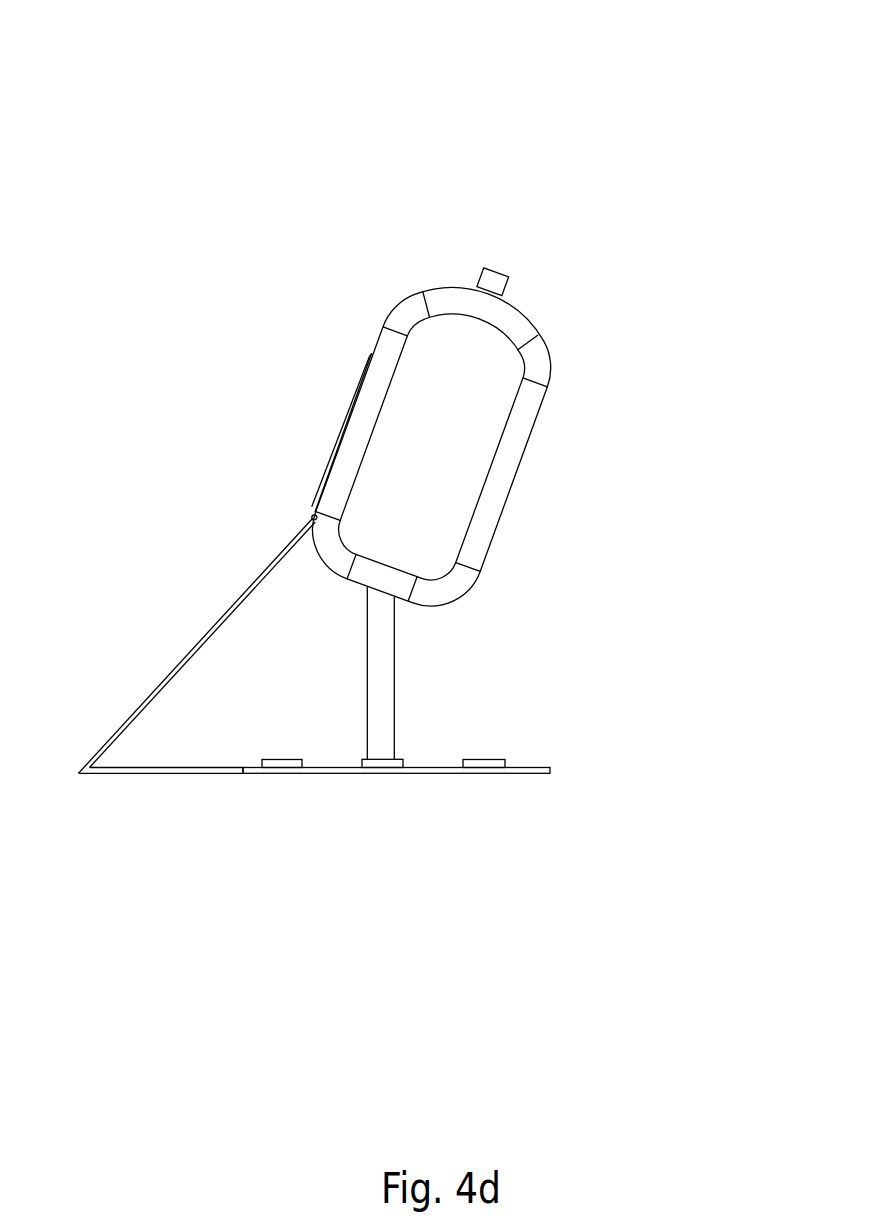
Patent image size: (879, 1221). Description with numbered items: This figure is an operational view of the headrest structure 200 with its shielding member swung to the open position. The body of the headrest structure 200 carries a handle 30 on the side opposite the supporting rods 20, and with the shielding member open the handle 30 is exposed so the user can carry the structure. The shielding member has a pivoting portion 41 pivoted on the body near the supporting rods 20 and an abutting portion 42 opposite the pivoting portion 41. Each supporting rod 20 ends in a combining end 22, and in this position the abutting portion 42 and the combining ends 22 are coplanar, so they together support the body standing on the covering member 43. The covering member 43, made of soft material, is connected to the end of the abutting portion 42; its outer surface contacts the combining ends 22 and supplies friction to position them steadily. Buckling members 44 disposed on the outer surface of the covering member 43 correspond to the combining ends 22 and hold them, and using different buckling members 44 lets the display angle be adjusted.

The headrest structure 200 is at (88, 48).
The handle 30 is at (498, 283).
The pivoting portion 41 is at (313, 517).
The supporting rod 20 is at (403, 653).
The combining end 22 is at (385, 752).
The abutting portion 42 is at (187, 770).
The covering member 43 is at (438, 768).
The buckling member 44 is at (278, 770).